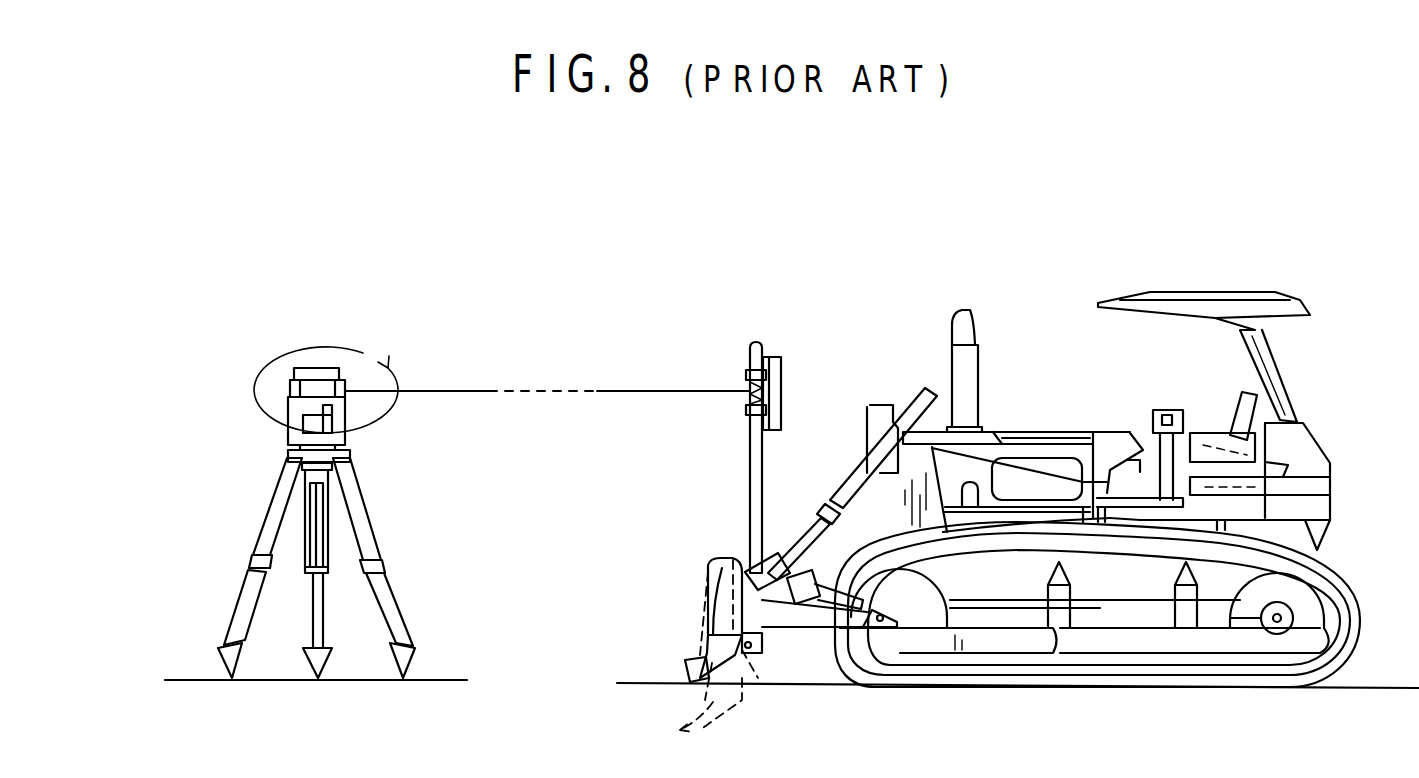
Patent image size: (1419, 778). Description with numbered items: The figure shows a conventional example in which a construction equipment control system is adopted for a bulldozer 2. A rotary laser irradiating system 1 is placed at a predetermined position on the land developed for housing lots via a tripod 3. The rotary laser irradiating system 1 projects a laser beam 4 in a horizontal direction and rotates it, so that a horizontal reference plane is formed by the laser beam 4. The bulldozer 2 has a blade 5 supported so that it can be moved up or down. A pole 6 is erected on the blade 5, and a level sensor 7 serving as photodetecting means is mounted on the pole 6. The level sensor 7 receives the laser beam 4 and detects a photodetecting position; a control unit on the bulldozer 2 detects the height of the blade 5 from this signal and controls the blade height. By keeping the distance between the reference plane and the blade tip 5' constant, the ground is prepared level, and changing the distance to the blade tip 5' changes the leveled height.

The rotary laser irradiating system 1 is at (329, 318).
The bulldozer 2 is at (1048, 308).
The tripod 3 is at (268, 508).
The laser beam 4 is at (446, 391).
The blade 5 is at (663, 604).
The blade tip 5' is at (659, 660).
The pole 6 is at (748, 468).
The level sensor 7 is at (782, 363).